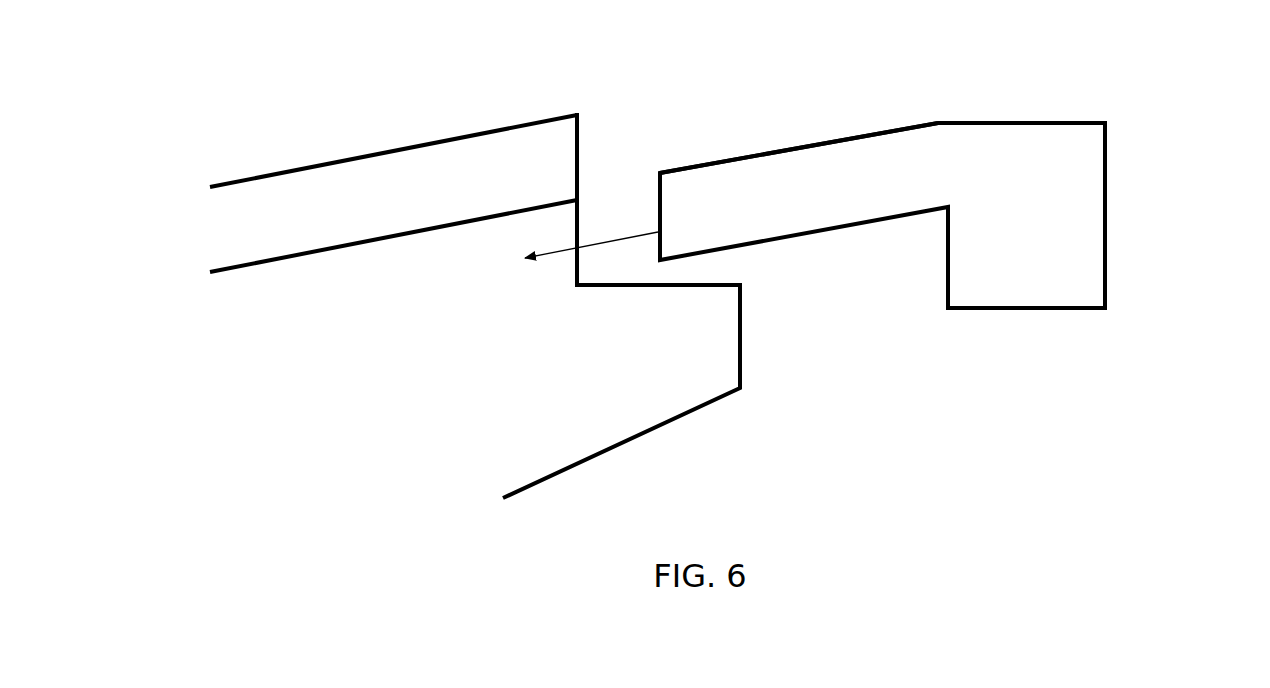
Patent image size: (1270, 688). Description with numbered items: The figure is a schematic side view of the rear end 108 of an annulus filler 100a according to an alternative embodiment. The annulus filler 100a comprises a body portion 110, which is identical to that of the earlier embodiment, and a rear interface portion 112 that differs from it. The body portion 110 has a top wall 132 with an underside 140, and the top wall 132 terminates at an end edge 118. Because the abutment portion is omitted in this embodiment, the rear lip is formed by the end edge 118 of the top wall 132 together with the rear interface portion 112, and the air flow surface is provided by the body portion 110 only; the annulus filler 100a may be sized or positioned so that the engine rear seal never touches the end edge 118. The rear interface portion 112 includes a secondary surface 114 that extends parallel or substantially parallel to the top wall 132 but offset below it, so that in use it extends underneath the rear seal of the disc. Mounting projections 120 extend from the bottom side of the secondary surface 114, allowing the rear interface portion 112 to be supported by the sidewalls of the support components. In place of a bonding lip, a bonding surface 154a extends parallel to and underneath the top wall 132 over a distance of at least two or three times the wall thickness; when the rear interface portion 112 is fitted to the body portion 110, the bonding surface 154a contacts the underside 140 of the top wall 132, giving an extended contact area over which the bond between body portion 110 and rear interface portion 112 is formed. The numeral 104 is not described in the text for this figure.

The annulus filler 100a is at (242, 132).
The first flange 104 is at (498, 127).
The top wall 132 is at (393, 197).
The underside 140 is at (322, 255).
The end edge 118 is at (580, 148).
The body portion 110 is at (587, 391).
The bonding surface 154a is at (817, 145).
The secondary surface 114 is at (1033, 122).
The rear interface portion 112 is at (933, 178).
The mounting projections 120 is at (1067, 272).
The rear end 108 is at (1118, 367).